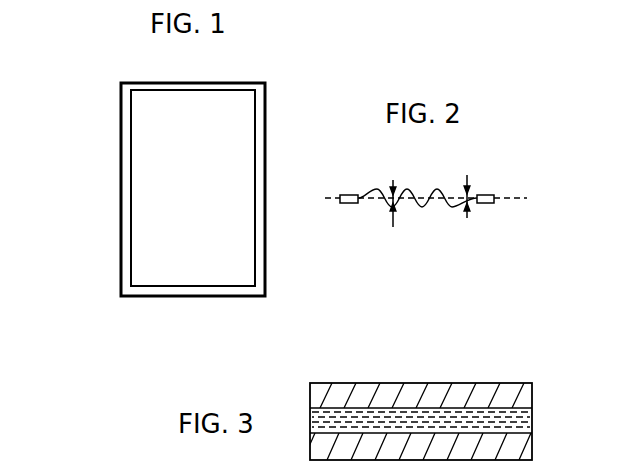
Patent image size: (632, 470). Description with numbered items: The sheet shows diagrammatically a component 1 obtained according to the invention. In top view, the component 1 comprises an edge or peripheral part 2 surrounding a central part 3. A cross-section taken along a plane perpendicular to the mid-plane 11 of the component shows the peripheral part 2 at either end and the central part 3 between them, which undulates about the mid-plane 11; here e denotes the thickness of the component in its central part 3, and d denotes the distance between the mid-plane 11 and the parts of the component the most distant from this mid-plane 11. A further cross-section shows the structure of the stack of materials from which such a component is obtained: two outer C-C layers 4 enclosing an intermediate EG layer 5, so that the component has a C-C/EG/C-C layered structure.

In FIG. 1, the component 1 is at (128, 310).
In FIG. 2, the component 1 is at (494, 205).
In FIG. 1, the edge or peripheral part 2 is at (112, 205).
In FIG. 2, the edge or peripheral part 2 is at (350, 213).
In FIG. 1, the central part 3 is at (226, 272).
In FIG. 2, the central part 3 is at (415, 188).
In FIG. 3, the C-C material layer 4 is at (532, 400).
In FIG. 3, the EG material layer 5 is at (532, 422).
In FIG. 2, the mid-plane 11 is at (439, 199).
In FIG. 2, the distance d is at (389, 209).
In FIG. 2, the thickness e is at (470, 193).